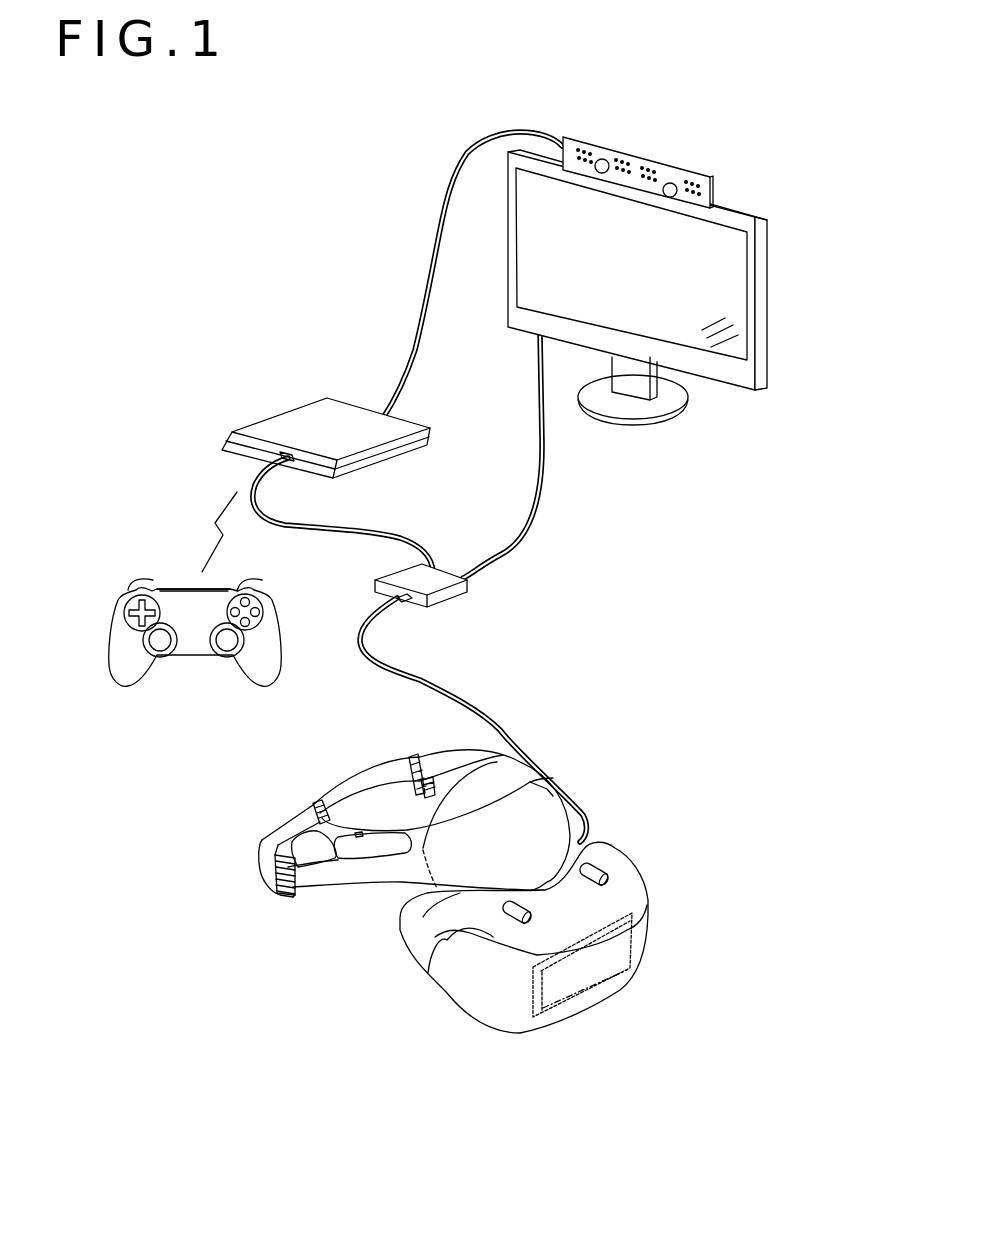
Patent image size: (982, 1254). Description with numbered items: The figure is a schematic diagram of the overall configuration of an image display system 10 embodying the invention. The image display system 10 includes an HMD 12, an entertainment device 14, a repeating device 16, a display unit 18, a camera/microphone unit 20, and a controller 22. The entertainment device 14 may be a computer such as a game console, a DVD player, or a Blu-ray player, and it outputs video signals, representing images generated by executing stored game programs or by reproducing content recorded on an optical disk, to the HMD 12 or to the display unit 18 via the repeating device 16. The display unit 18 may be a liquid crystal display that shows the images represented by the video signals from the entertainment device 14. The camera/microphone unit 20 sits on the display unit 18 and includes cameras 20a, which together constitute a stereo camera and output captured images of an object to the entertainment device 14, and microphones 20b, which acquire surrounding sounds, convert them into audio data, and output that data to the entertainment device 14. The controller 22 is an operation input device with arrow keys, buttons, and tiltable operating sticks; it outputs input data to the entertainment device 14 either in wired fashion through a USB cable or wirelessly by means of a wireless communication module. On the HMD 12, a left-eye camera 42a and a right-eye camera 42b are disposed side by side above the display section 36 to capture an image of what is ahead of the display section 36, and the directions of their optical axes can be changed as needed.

The image display system 10 is at (750, 1020).
The HMD 12 is at (508, 1030).
The entertainment device 14 is at (275, 415).
The repeating device 16 is at (467, 580).
The display unit 18 is at (768, 300).
The camera/microphone unit 20 is at (713, 188).
The cameras 20a is at (597, 179).
The microphones 20b is at (627, 152).
The controller 22 is at (280, 637).
The display section 36 is at (650, 930).
The left-eye camera 42a is at (598, 862).
The right-eye camera 42b is at (513, 892).